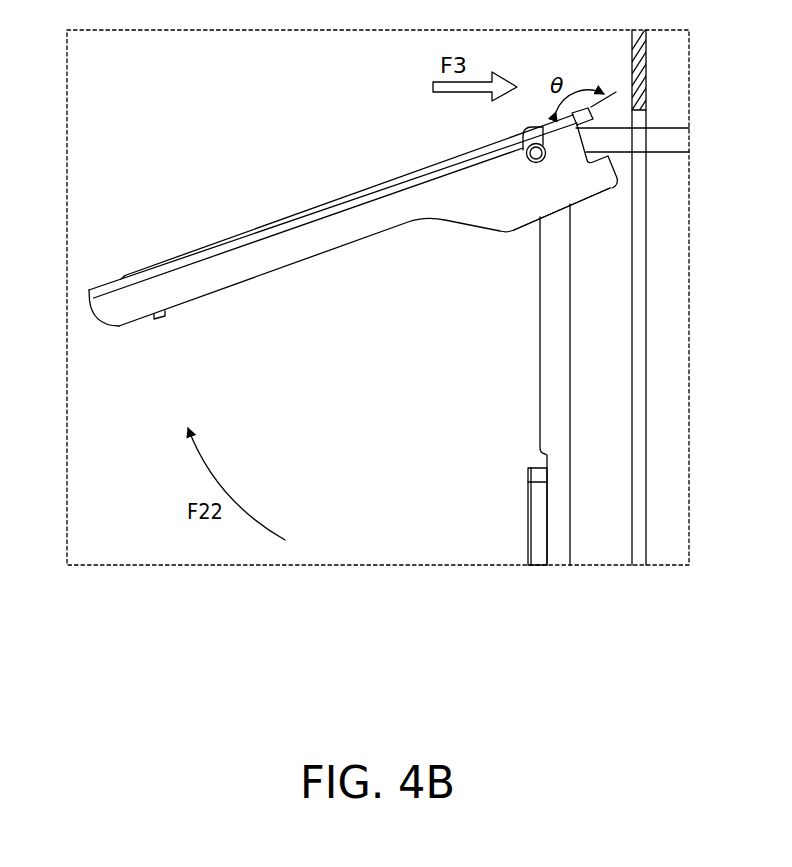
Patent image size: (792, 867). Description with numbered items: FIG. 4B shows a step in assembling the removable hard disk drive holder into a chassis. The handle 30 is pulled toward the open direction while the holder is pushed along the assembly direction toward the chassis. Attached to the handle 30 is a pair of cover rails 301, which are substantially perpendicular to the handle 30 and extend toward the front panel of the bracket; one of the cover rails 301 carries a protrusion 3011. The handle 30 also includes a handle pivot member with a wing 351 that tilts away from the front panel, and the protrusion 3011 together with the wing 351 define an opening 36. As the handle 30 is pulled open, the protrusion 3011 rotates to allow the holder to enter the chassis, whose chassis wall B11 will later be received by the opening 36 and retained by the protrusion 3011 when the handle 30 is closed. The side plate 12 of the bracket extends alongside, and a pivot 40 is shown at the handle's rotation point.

The handle 30 is at (427, 195).
The cover rails 301 is at (240, 267).
The protrusion 3011 is at (600, 177).
The wing 351 is at (583, 104).
The opening 36 is at (608, 144).
The pivot pin 40 is at (535, 168).
The side plate 12 is at (674, 139).
The chassis wall B11 is at (641, 70).